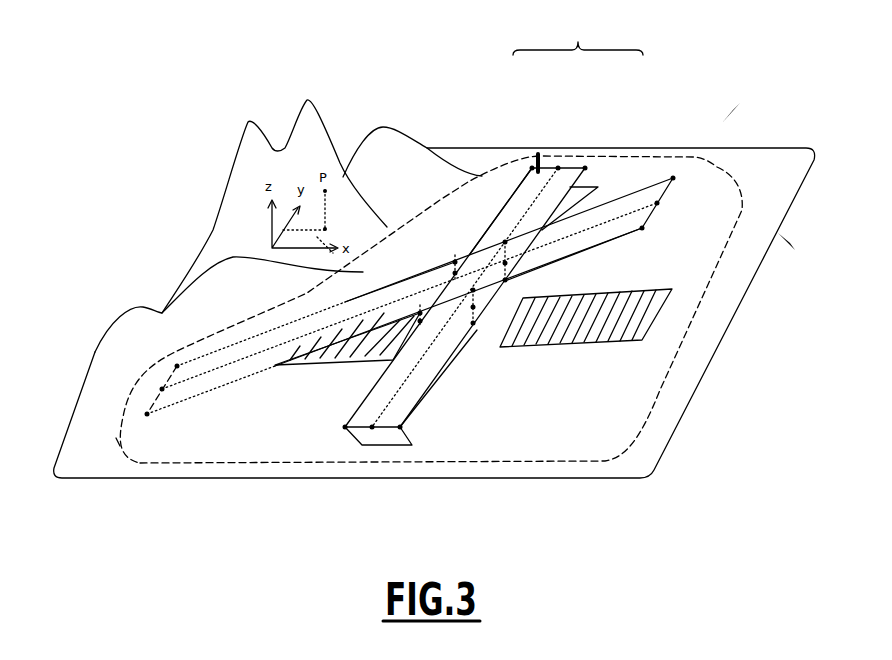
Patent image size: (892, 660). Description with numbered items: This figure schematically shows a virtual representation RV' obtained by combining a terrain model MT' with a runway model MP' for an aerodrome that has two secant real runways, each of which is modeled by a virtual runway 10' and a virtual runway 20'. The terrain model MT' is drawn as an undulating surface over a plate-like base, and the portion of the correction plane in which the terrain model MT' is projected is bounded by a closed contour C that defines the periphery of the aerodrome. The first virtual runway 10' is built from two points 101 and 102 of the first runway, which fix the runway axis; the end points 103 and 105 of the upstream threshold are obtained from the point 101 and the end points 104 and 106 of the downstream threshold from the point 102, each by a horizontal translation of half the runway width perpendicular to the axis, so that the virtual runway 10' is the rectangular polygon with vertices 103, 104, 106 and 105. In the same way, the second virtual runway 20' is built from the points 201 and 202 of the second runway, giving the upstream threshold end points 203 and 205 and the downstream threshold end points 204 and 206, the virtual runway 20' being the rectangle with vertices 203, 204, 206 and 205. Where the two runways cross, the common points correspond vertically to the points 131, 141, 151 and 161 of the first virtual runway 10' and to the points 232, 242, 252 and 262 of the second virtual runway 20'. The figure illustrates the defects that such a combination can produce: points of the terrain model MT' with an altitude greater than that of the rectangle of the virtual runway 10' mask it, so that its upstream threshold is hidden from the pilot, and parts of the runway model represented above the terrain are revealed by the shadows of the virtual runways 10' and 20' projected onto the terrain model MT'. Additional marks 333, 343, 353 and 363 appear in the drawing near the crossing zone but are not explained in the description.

The virtual runway 10' is at (410, 243).
The virtual runway 20' is at (471, 253).
The runway model MP' is at (578, 35).
The virtual representation RV' is at (746, 88).
The terrain model MT' is at (799, 278).
The closed contour C is at (698, 318).
The point of the runway 101 is at (162, 389).
The point of the runway 102 is at (657, 203).
The end point of the upstream threshold 103 is at (118, 442).
The end point of the downstream threshold 104 is at (642, 228).
The end point of the upstream threshold 105 is at (177, 366).
The end point of the downstream threshold 106 is at (673, 178).
The point of the first virtual runway 131 is at (399, 292).
The point of the first virtual runway 141 is at (508, 280).
The point of the first virtual runway 151 is at (498, 213).
The point of the first virtual runway 161 is at (455, 260).
The point of the runway 201 is at (373, 427).
The point of the runway 202 is at (558, 166).
The end point of the upstream threshold 203 is at (413, 443).
The end point of the downstream threshold 204 is at (585, 166).
The end point of the upstream threshold 205 is at (345, 427).
The end point of the downstream threshold 206 is at (533, 160).
The point of the second virtual runway 232 is at (420, 414).
The point of the second virtual runway 242 is at (470, 350).
The point of the second virtual runway 252 is at (577, 343).
The point of the second virtual runway 262 is at (420, 310).
The hatched overlap region left 333 is at (385, 362).
The measurement point 343 is at (475, 330).
The first pass lower edge 353 is at (565, 258).
The measurement point 363 is at (505, 242).